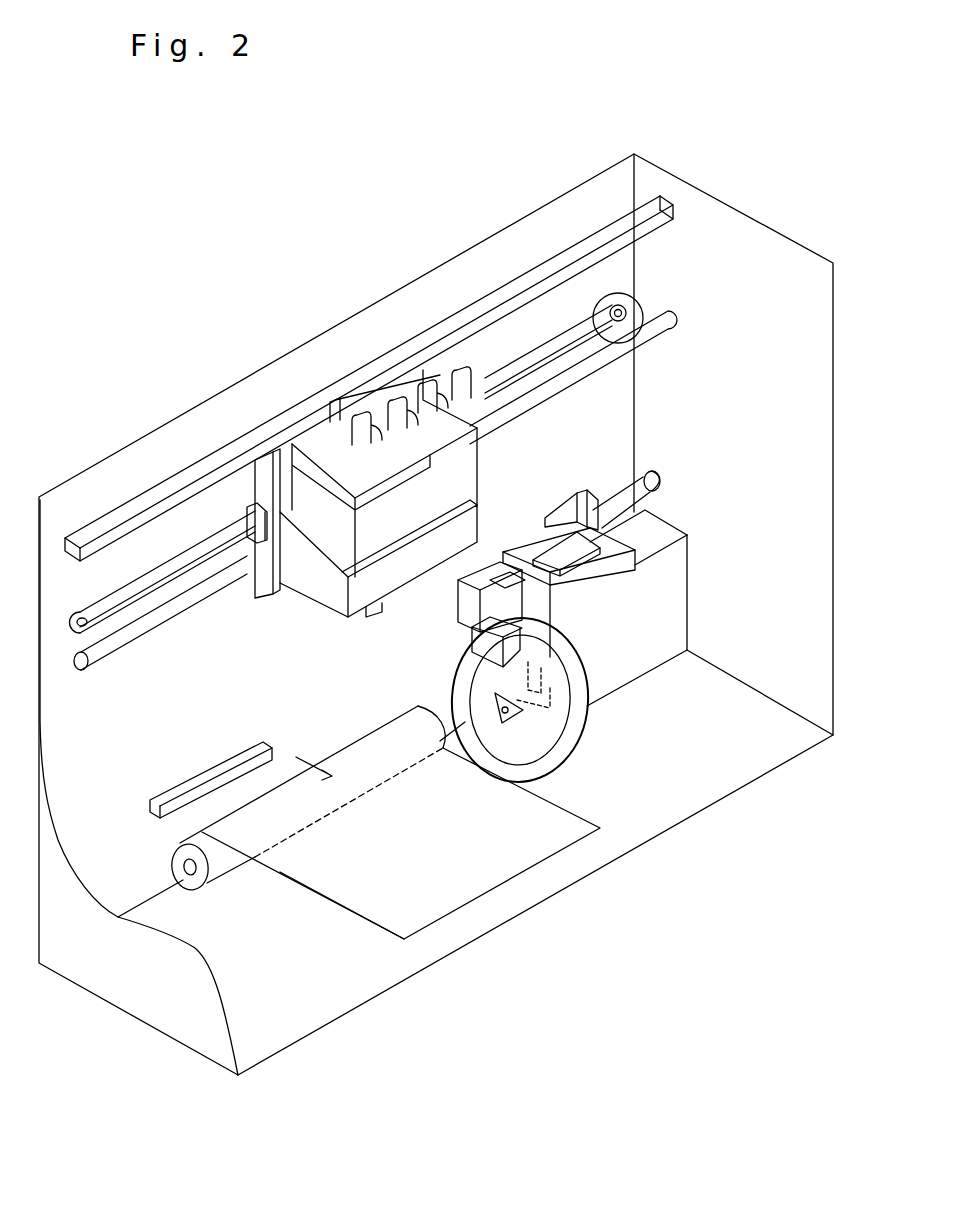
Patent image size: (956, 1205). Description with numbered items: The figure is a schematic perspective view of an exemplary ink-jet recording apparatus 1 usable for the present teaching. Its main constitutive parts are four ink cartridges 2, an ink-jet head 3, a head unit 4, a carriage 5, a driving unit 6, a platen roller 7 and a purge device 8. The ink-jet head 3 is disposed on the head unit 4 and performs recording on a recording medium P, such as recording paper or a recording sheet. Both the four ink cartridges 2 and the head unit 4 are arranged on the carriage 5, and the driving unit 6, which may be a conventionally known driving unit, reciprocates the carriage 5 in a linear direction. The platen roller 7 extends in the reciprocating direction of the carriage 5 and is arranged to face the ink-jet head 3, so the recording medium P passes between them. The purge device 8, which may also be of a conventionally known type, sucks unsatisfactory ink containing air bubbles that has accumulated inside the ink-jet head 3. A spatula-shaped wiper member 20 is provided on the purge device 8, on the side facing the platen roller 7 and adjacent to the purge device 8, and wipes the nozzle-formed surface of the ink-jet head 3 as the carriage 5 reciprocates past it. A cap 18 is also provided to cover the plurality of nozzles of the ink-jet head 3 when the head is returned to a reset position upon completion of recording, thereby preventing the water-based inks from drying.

The ink-jet recording apparatus 1 is at (336, 186).
The ink cartridges 2 is at (375, 412).
The ink-jet head 3 is at (420, 583).
The head unit 4 is at (398, 614).
The carriage 5 is at (258, 484).
The driving unit 6 is at (658, 186).
The platen roller 7 is at (225, 857).
The purge device 8 is at (747, 635).
The cap 18 is at (668, 514).
The wiper member 20 is at (493, 623).
The recording medium P is at (390, 913).